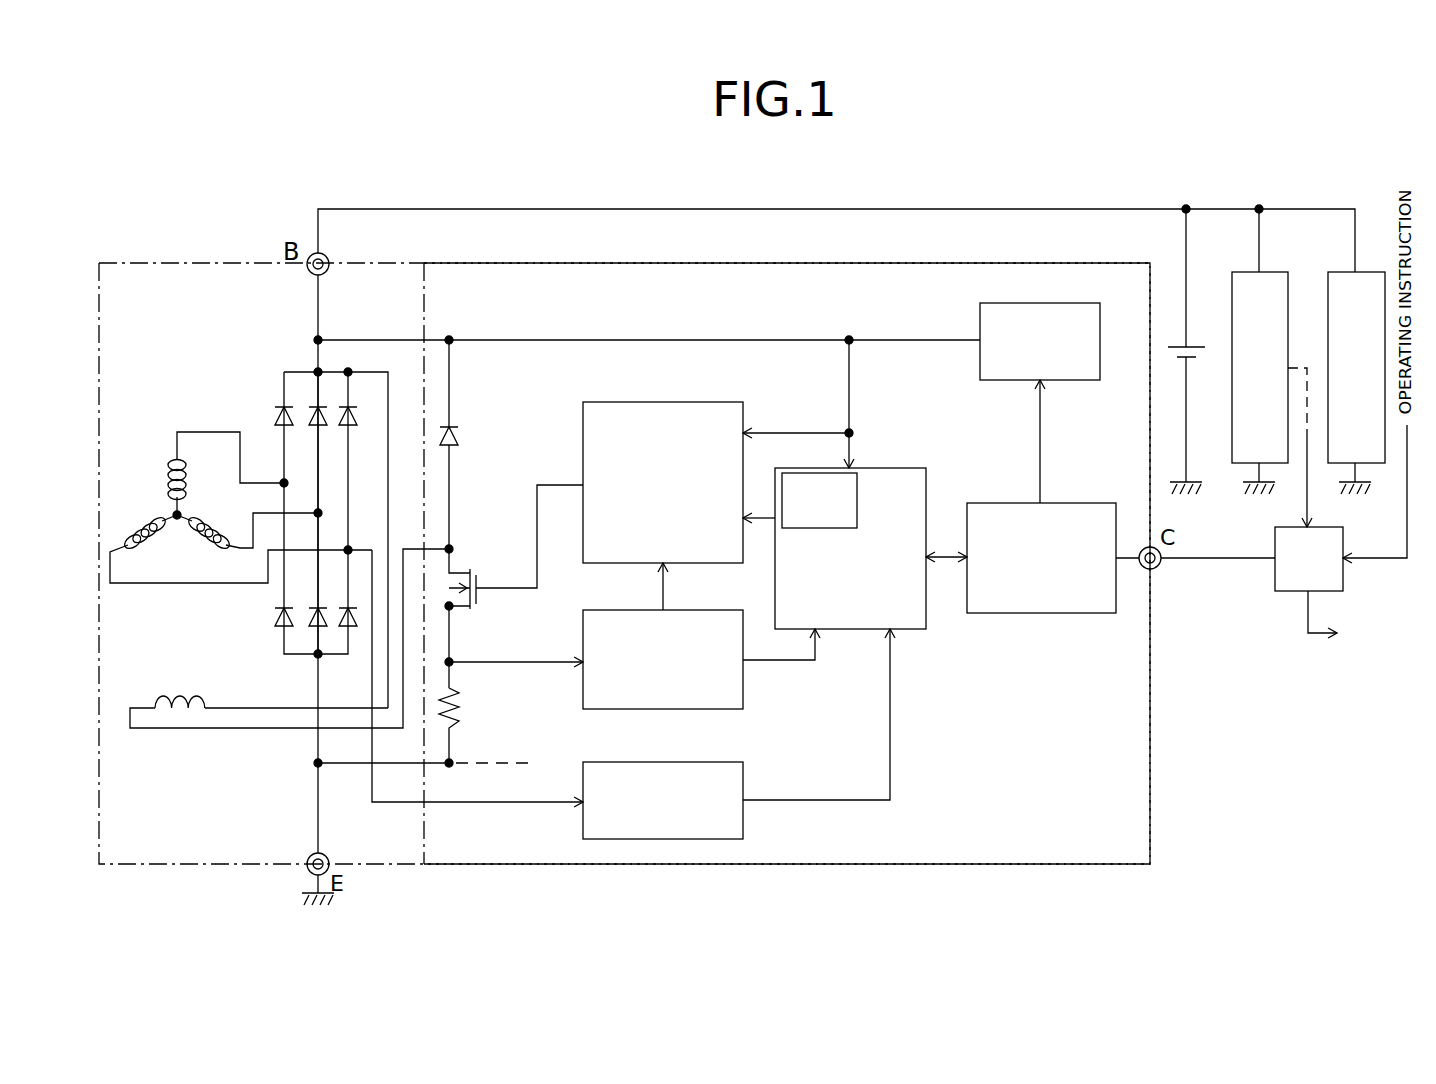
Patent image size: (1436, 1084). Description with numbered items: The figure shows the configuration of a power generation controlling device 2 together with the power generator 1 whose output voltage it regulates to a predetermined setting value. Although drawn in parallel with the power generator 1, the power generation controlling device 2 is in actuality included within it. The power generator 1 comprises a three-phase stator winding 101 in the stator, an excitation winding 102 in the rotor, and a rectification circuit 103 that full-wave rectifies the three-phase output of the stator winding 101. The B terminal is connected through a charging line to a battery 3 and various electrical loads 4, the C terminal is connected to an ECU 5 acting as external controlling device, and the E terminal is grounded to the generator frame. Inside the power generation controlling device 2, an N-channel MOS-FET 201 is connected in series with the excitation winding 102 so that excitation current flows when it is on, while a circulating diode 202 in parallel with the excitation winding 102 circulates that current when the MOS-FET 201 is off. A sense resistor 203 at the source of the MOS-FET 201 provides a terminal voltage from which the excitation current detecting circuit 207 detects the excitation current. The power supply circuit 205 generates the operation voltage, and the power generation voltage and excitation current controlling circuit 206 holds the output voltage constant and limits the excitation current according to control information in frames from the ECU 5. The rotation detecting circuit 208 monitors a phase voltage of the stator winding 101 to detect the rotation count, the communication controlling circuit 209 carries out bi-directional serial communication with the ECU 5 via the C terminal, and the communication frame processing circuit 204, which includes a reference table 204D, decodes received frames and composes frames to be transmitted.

The power generator 1 is at (110, 263).
The power generation controlling device 2 is at (1073, 263).
The battery 3 is at (1192, 347).
The electrical loads 4 is at (1270, 272).
The ECU 5 is at (1275, 540).
The three-phase stator winding 101 is at (175, 514).
The excitation winding 102 is at (178, 699).
The rectification circuit 103 is at (298, 372).
The MOS-FET 201 is at (462, 573).
The circulating diode 202 is at (455, 427).
The sense resistor 203 is at (459, 713).
The communication frame processing circuit 204 is at (872, 517).
The reference table 204D is at (858, 488).
The power supply circuit 205 is at (1000, 303).
The power generation voltage and excitation current controlling circuit 206 is at (665, 402).
The excitation current detecting circuit 207 is at (638, 610).
The rotation detecting circuit 208 is at (698, 762).
The communication controlling circuit 209 is at (1085, 503).